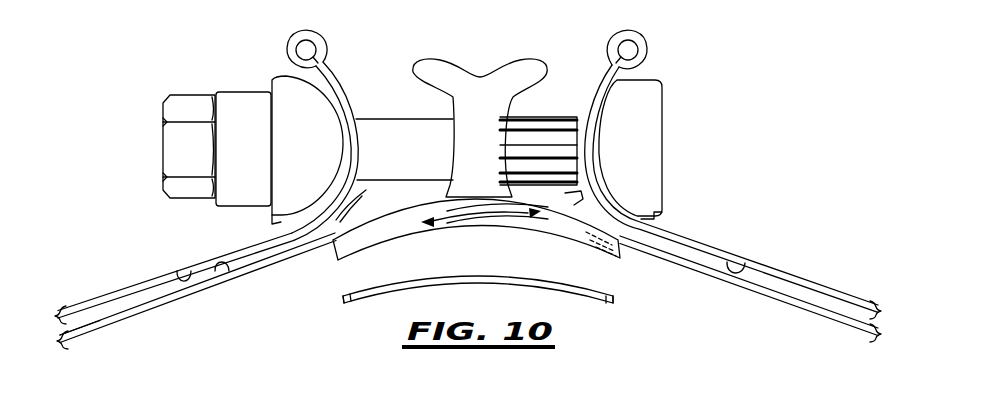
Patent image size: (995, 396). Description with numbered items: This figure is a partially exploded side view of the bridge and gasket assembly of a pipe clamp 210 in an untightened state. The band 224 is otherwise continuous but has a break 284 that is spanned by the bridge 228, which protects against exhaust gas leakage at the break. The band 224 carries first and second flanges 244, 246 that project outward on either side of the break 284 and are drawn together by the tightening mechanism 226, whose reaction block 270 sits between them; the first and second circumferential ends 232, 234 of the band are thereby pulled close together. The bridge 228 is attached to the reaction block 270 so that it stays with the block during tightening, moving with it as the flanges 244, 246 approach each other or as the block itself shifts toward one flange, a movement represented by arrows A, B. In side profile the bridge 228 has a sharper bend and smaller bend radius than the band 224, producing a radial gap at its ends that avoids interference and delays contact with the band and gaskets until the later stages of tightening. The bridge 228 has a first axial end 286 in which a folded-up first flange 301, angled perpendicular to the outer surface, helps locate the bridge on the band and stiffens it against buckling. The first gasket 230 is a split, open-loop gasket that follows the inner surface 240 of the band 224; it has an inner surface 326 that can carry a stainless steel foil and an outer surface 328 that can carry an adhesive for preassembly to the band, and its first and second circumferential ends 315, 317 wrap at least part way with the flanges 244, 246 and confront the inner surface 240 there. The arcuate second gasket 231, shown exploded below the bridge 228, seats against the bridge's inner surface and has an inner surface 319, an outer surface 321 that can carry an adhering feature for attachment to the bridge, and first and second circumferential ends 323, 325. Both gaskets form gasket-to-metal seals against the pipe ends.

The pipe clamp 210 is at (687, 56).
The band 224 is at (107, 277).
The tightening mechanism 226 is at (270, 72).
The bridge 228 is at (602, 266).
The first gasket 230 is at (139, 323).
The second gasket 231 is at (585, 310).
The first circumferential end 232 is at (255, 236).
The second circumferential end 234 is at (675, 235).
The inner surface 240 is at (182, 277).
The first flange 244 is at (302, 33).
The second flange 246 is at (630, 33).
The reaction block 270 is at (478, 93).
The break 284 is at (393, 195).
The first axial end 286 is at (546, 234).
The first flange 301 is at (377, 231).
The first circumferential end 315 is at (370, 192).
The second circumferential end 317 is at (582, 193).
The inner surface 319 is at (372, 297).
The outer surface 321 is at (452, 277).
The first circumferential end 323 is at (341, 298).
The second circumferential end 325 is at (613, 299).
The inner surface 326 is at (100, 324).
The outer surface 328 is at (222, 268).
The arrow A is at (474, 242).
The arrow B is at (531, 240).